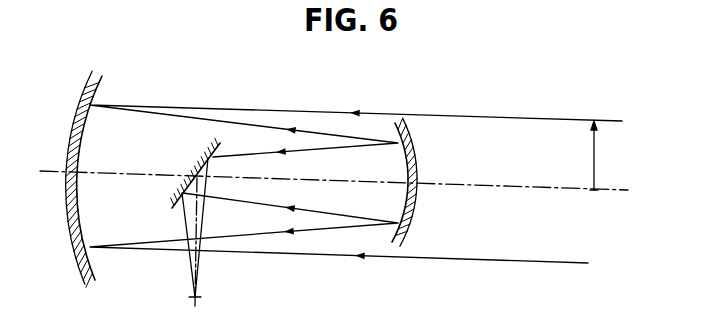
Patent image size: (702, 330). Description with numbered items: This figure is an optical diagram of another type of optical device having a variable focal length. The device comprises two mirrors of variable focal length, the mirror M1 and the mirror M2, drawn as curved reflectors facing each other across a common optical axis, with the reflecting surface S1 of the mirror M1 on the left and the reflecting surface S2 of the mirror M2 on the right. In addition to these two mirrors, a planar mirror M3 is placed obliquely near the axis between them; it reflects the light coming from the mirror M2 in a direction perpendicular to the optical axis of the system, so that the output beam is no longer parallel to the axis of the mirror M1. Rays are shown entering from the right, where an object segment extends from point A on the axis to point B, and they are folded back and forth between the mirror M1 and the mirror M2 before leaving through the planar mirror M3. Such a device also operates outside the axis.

The mirror of variable focal length M1 is at (94, 193).
The reflecting surface of first mirror S1 is at (74, 178).
The mirror of variable focal length M2 is at (409, 212).
The reflecting surface of second mirror S2 is at (417, 182).
The planar mirror M3 is at (194, 173).
The object point A is at (595, 205).
The object point B is at (596, 139).